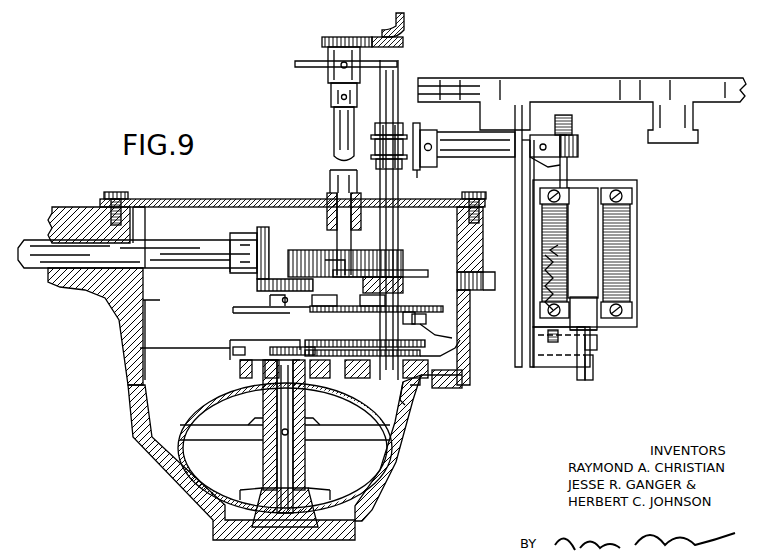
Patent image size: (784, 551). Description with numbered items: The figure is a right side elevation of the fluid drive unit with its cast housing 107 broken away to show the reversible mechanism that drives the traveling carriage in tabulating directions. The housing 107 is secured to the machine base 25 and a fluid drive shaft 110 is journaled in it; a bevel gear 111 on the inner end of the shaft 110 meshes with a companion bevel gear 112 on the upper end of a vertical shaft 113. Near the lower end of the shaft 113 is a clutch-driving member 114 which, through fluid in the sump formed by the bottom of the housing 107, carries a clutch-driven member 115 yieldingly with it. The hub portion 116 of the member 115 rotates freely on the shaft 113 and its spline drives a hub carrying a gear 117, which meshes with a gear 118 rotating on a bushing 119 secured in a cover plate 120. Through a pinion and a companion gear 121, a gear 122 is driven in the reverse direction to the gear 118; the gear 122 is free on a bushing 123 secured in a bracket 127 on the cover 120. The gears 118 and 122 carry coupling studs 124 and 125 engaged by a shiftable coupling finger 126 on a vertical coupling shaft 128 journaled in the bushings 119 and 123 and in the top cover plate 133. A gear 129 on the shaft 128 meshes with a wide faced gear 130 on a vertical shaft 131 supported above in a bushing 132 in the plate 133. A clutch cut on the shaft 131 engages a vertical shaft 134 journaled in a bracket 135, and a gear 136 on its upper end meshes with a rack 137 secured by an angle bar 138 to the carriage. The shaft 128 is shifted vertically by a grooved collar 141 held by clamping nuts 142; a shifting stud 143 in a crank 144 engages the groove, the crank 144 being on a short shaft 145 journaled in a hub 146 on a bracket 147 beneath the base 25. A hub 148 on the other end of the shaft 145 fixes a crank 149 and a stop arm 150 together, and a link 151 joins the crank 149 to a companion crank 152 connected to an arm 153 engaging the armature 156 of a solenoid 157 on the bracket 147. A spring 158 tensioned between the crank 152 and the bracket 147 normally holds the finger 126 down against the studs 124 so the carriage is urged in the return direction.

The machine base 25 is at (495, 85).
The cast housing 107 is at (115, 292).
The fluid drive shaft 110 is at (38, 246).
The bevel gear 111 is at (272, 199).
The companion bevel gear 112 is at (262, 291).
The vertical shaft 113 is at (277, 411).
The clutch-driving member 114 is at (360, 493).
The clutch-driven member 115 is at (392, 434).
The hub portion 116 is at (305, 410).
The gear 117 is at (233, 350).
The gear 118 is at (428, 378).
The bushing 119 is at (420, 385).
The cover plate 120 is at (410, 408).
The companion gear 121 is at (262, 313).
The gear 122 is at (460, 316).
The bushing 123 is at (398, 306).
The coupling studs 124 is at (462, 349).
The coupling studs 125 is at (462, 334).
The shiftable coupling finger 126 is at (460, 366).
The bracket 127 is at (408, 277).
The coupling shaft 128 is at (400, 222).
The gear 129 is at (408, 268).
The wide faced gear 130 is at (322, 258).
The vertical shaft 131 is at (337, 228).
The bushing 132 is at (325, 185).
The top cover plate 133 is at (162, 199).
The vertical shaft 134 is at (334, 131).
The bracket 135 is at (295, 64).
The gear 136 is at (322, 43).
The rack 137 is at (403, 43).
The angle bar 138 is at (404, 17).
The grooved collar 141 is at (383, 143).
The clamping nuts 142 is at (398, 123).
The shifting stud 143 is at (413, 123).
The crank 144 is at (417, 170).
The short shaft 145 is at (580, 145).
The hub 146 is at (447, 146).
The bracket 147 is at (515, 172).
The hub 148 is at (545, 135).
The crank 149 is at (562, 118).
The stop arm 150 is at (562, 167).
The link 151 is at (570, 180).
The companion crank 152 is at (550, 352).
The arm 153 is at (585, 372).
The armature 156 is at (598, 316).
The solenoid 157 is at (622, 218).
The spring 158 is at (548, 318).